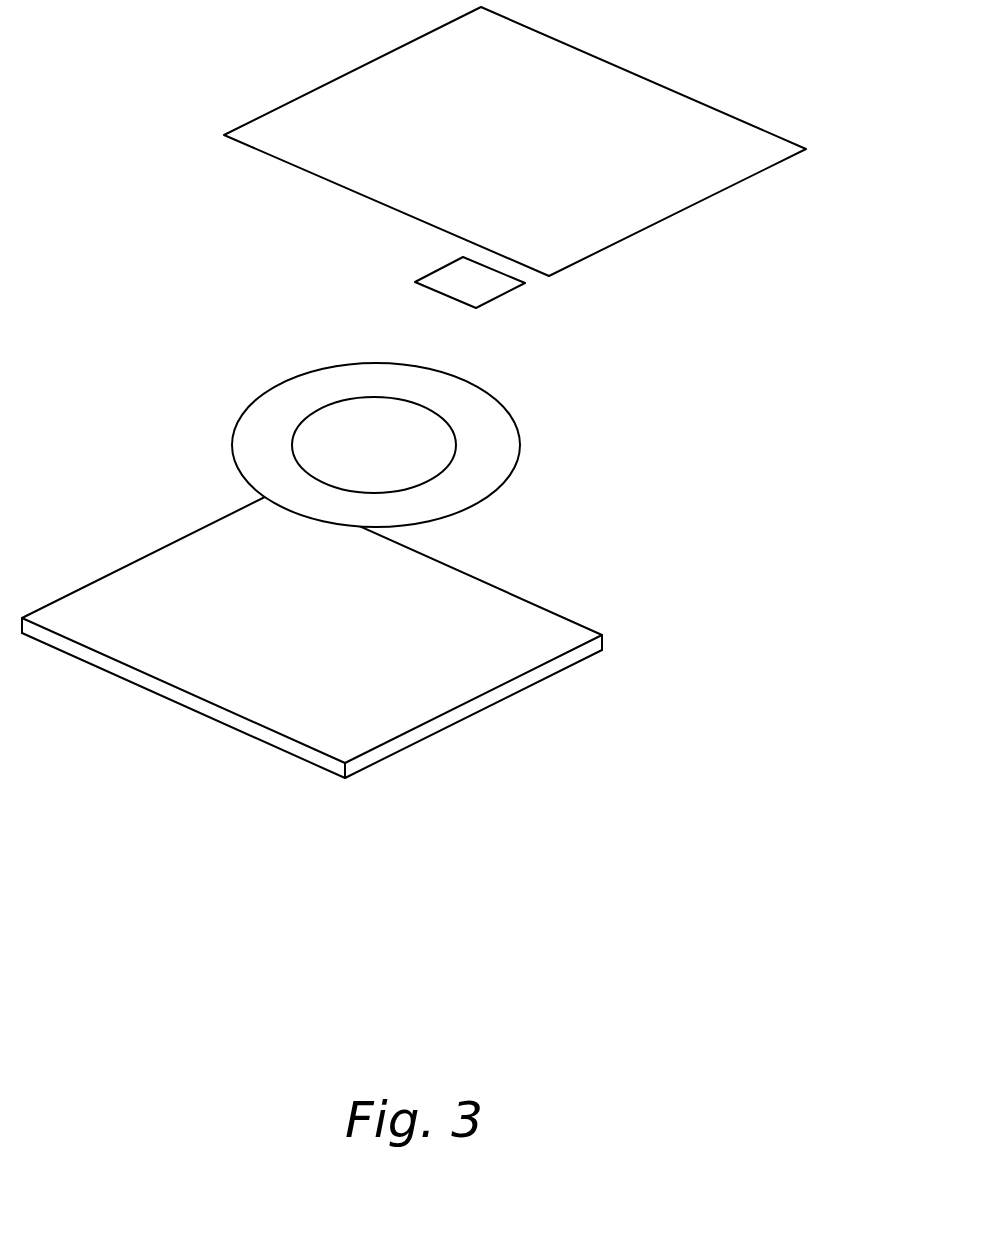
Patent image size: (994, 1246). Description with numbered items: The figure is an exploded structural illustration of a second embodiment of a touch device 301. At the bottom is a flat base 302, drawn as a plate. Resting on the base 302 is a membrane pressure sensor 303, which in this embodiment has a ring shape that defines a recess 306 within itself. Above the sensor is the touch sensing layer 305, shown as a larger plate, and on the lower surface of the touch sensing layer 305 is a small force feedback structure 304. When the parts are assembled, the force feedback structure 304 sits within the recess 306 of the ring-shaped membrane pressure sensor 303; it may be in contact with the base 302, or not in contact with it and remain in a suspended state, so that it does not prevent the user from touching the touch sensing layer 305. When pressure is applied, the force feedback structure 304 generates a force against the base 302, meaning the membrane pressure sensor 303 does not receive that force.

The touch device 301 is at (233, 288).
The base 302 is at (460, 698).
The membrane pressure sensor 303 is at (497, 473).
The force feedback structure 304 is at (485, 291).
The touch sensing layer 305 is at (660, 203).
The recess 306 is at (330, 425).